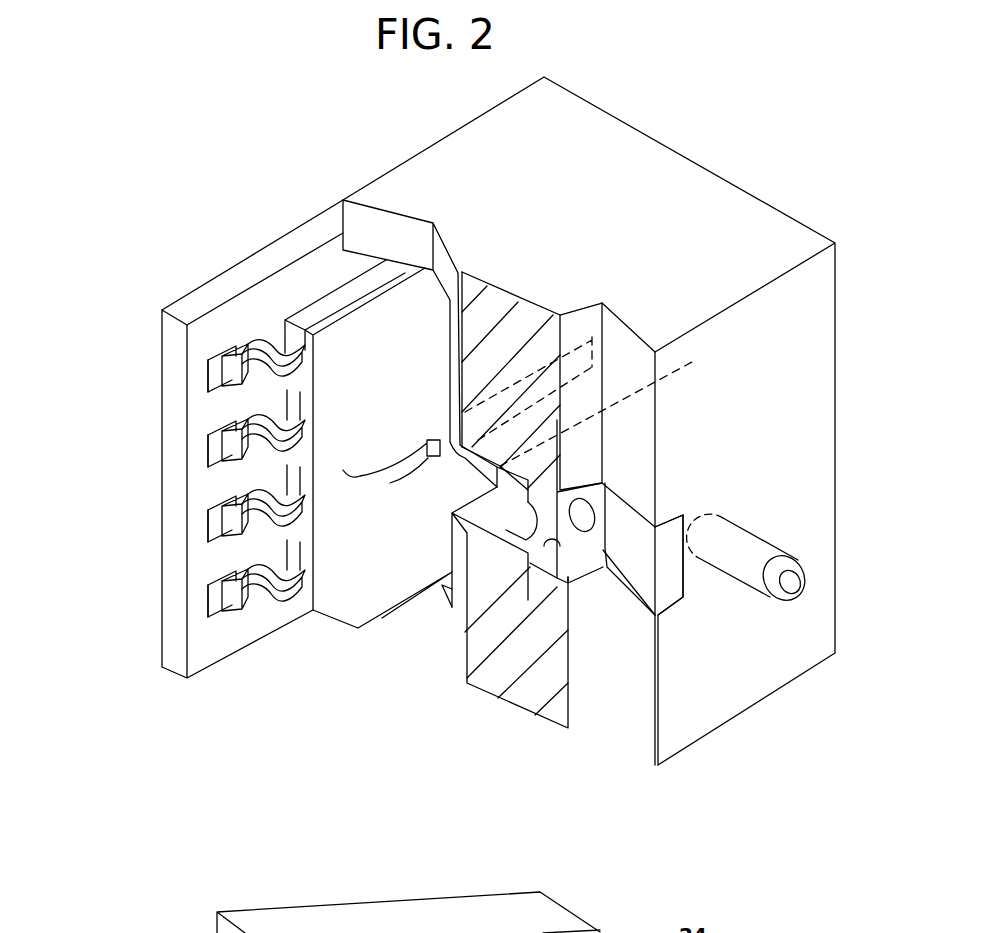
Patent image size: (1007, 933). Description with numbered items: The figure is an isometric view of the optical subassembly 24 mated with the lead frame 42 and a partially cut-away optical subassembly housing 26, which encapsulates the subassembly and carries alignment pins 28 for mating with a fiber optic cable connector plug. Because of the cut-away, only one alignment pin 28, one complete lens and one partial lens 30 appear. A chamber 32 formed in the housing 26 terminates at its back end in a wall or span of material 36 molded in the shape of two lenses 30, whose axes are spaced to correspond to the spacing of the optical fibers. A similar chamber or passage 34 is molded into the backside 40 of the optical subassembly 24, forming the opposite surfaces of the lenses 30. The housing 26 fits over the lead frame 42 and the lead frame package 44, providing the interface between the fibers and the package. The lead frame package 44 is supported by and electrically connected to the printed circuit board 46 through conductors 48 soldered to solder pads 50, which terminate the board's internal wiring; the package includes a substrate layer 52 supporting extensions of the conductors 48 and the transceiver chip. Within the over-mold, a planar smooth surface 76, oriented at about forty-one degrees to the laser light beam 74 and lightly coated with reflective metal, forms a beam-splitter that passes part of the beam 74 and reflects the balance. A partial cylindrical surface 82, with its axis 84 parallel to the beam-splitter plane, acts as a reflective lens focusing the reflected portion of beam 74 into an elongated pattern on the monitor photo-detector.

The optical subassembly 24 is at (762, 165).
The optical subassembly housing 26 is at (643, 220).
The alignment pin 28 is at (760, 558).
The lenses 30 is at (541, 548).
The chamber 32 is at (655, 596).
The chamber or passage 34 is at (502, 527).
The wall or span of material 36 is at (590, 492).
The backside of optical subassembly 40 is at (377, 337).
The lead frame 42 is at (318, 337).
The lead frame package 44 is at (323, 300).
The printed circuit board 46 is at (213, 640).
The conductors 48 is at (277, 595).
The solder pads 50 is at (217, 597).
The substrate layer 52 is at (320, 323).
The laser light beam 74 is at (438, 456).
The planar smooth surface 76 is at (433, 445).
The partial cylindrical surface 82 is at (475, 438).
The axis 84 is at (612, 407).